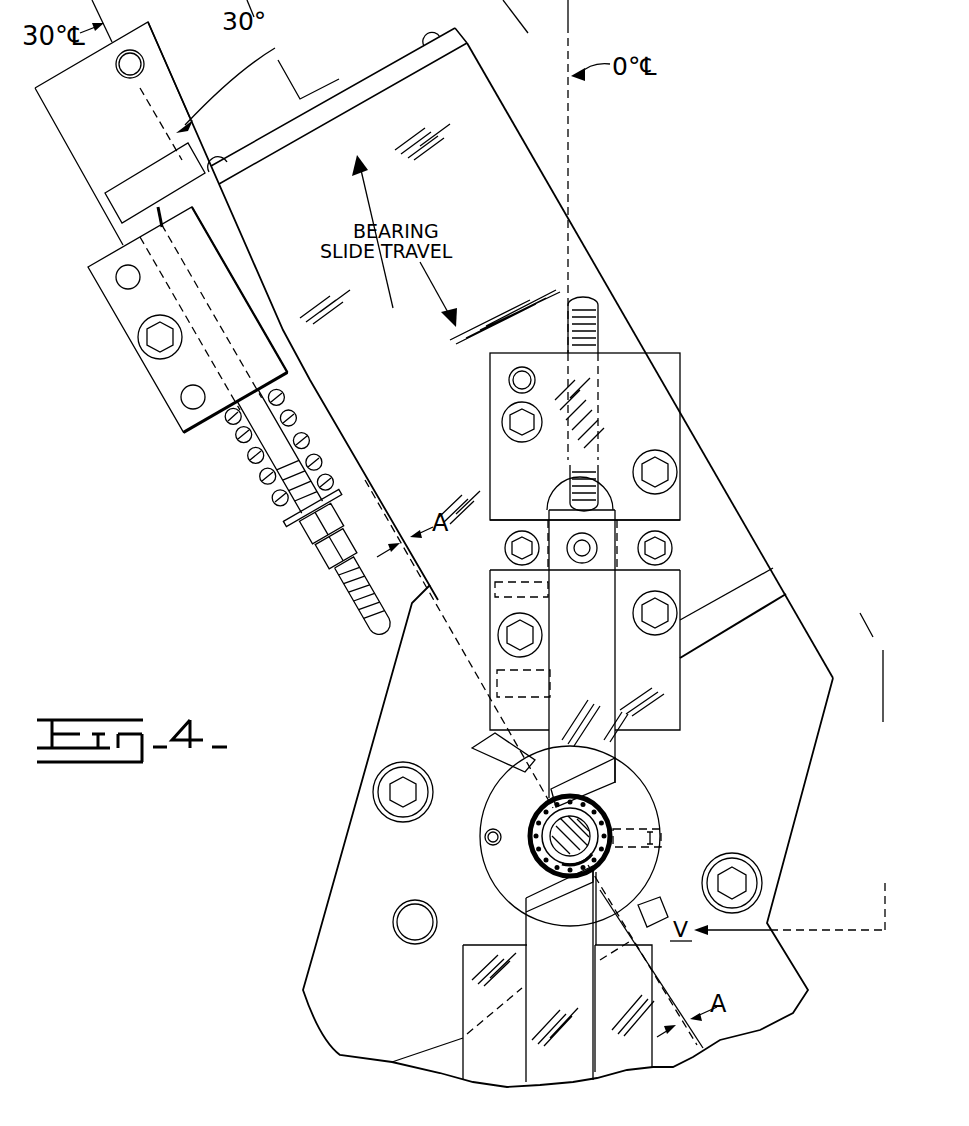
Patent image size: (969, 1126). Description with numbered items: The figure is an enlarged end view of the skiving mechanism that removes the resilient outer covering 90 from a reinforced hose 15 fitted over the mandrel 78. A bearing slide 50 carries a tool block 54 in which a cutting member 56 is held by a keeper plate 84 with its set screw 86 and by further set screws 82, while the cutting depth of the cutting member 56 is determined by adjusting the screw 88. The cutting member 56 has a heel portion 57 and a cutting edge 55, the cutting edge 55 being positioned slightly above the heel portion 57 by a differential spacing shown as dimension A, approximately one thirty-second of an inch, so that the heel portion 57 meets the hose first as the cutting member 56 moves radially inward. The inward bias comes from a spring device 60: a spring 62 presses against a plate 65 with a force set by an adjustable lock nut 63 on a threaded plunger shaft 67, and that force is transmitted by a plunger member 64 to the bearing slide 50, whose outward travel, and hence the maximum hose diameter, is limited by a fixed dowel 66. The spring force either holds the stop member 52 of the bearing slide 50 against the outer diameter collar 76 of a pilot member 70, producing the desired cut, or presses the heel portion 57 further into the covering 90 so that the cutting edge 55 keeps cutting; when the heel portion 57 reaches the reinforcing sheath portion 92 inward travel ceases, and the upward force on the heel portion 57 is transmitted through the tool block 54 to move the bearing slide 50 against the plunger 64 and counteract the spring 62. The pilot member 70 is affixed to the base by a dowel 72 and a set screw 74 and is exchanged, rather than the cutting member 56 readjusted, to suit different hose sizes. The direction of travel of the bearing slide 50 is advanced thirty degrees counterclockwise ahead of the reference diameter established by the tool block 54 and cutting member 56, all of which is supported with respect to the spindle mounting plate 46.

The reinforced hose 15 is at (628, 821).
The spindle mounting plate 46 is at (788, 697).
The bearing slide 50 is at (396, 376).
The stop member 52 is at (776, 590).
The tool block 54 is at (643, 385).
The cutting edge 55 is at (576, 797).
The cutting member 56 is at (596, 651).
The heel portion 57 is at (598, 806).
The spring device 60 is at (104, 322).
The spring 62 is at (250, 470).
The adjustable lock nut 63 is at (326, 564).
The plunger member 64 is at (120, 208).
The plate 65 is at (290, 529).
The fixed dowel 66 is at (140, 62).
The threaded plunger shaft 67 is at (365, 597).
The pilot member 70 is at (520, 884).
The dowel 72 is at (484, 838).
The set screw 74 is at (661, 838).
The outer diameter collar 76 is at (612, 766).
The mandrel 78 is at (537, 828).
The set screws 82 is at (495, 581).
The keeper plate 84 is at (680, 526).
The set screw 86 is at (583, 558).
The screw 88 is at (588, 298).
The resilient outer covering 90 is at (602, 858).
The reinforcing sheath portion 92 is at (545, 810).